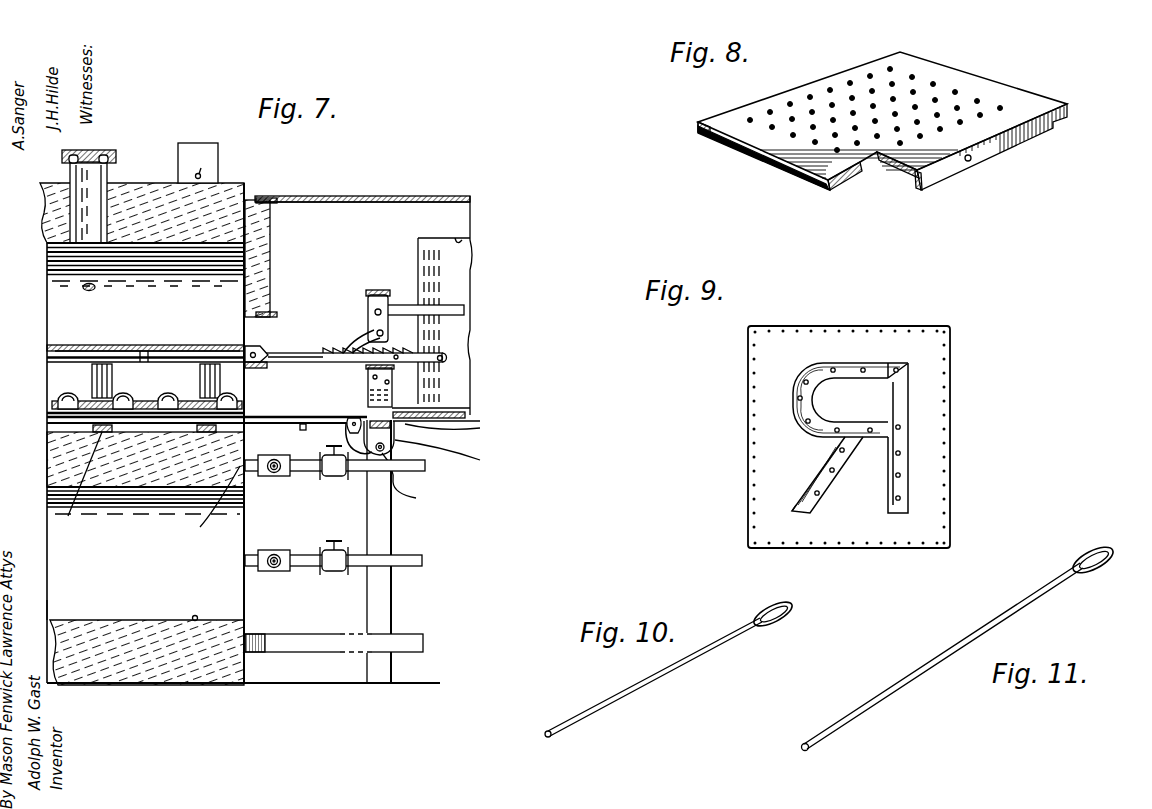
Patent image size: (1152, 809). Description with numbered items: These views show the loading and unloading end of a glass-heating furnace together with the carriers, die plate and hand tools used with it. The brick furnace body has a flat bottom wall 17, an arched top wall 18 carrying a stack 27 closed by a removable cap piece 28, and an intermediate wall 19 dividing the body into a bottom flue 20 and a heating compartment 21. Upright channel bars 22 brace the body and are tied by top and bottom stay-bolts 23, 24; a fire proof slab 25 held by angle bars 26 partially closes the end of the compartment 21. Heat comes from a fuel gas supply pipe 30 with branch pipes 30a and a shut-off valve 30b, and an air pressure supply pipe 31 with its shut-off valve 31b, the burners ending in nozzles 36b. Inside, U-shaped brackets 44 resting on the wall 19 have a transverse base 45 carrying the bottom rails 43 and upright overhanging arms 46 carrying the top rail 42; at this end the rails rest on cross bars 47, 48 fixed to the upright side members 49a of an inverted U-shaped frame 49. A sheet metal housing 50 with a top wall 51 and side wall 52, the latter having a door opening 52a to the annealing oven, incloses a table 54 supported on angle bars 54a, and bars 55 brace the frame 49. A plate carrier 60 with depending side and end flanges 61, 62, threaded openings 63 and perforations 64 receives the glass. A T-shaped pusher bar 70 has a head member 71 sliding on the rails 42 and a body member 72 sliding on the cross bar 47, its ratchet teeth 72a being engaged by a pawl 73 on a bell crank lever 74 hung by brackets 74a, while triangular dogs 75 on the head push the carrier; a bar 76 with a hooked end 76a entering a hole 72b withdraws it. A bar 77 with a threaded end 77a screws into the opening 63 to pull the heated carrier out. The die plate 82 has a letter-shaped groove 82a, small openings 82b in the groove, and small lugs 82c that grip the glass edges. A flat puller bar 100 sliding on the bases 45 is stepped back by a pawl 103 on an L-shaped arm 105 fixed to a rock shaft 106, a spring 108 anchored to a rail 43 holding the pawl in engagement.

In FIG. 7, the bottom wall 17 is at (125, 628).
In FIG. 7, the top wall 18 is at (42, 209).
In FIG. 7, the intermediate wall 19 is at (245, 466).
In FIG. 7, the bottom flue 20 is at (94, 598).
In FIG. 7, the heating compartment 21 is at (47, 289).
In FIG. 7, the upright channel bars 22 is at (197, 143).
In FIG. 7, the top stay-bolt 23 is at (192, 166).
In FIG. 7, the bottom stay-bolt 24 is at (196, 616).
In FIG. 7, the fire proof slab 25 is at (270, 245).
In FIG. 7, the angle bars 26 is at (275, 206).
In FIG. 7, the stack 27 is at (108, 157).
In FIG. 7, the cap piece 28 is at (90, 152).
In FIG. 7, the fuel gas supply pipe 30 is at (418, 472).
In FIG. 7, the fuel gas branch pipe 30a is at (211, 507).
In FIG. 7, the shut-off valve 30b is at (328, 477).
In FIG. 7, the air pressure supply pipe 31 is at (254, 567).
In FIG. 7, the shut-off valve 31b is at (330, 572).
In FIG. 7, the nozzle 36b is at (94, 289).
In FIG. 7, the top rail 42 is at (148, 355).
In FIG. 7, the bottom rail 43 is at (392, 415).
In FIG. 7, the U-shaped bracket 44 is at (92, 380).
In FIG. 7, the transverse base 45 is at (77, 483).
In FIG. 7, the upright overhanging arms 46 is at (200, 380).
In FIG. 7, the cross bar 47 is at (396, 374).
In FIG. 7, the cross bar 48 is at (396, 437).
In FIG. 7, the inverted U-shaped frame 49 is at (401, 621).
In FIG. 7, the upright side members 49a is at (391, 520).
In FIG. 7, the sheet metal housing 50 is at (442, 190).
In FIG. 7, the top wall 51 is at (392, 197).
In FIG. 7, the side wall 52 is at (471, 216).
In FIG. 7, the door opening 52a is at (458, 241).
In FIG. 7, the table 54 is at (466, 415).
In FIG. 7, the angle bars 54a is at (471, 430).
In FIG. 7, the brace bars 55 is at (319, 640).
In FIG. 7, the plate carrier 60 is at (190, 345).
In FIG. 8, the plate carrier 60 is at (826, 69).
In FIG. 8, the side flange 61 is at (856, 178).
In FIG. 7, the end flange 62 is at (140, 353).
In FIG. 8, the end flange 62 is at (915, 182).
In FIG. 8, the threaded opening 63 is at (970, 161).
In FIG. 7, the perforations 64 is at (95, 346).
In FIG. 8, the perforations 64 is at (912, 77).
In FIG. 7, the pusher bar 70 is at (315, 376).
In FIG. 7, the head member 71 is at (256, 368).
In FIG. 7, the body member 72 is at (297, 353).
In FIG. 7, the ratchet teeth 72a is at (396, 356).
In FIG. 7, the hole 72b is at (445, 358).
In FIG. 7, the pawl 73 is at (355, 338).
In FIG. 7, the bell crank lever 74 is at (442, 305).
In FIG. 7, the bracket 74a is at (372, 293).
In FIG. 7, the triangular dogs 75 is at (254, 348).
In FIG. 11, the bar 76 is at (878, 695).
In FIG. 11, the hooked end 76a is at (806, 742).
In FIG. 10, the bar 77 is at (618, 696).
In FIG. 10, the threaded end 77a is at (552, 728).
In FIG. 9, the die plate 82 is at (803, 320).
In FIG. 9, the groove 82a is at (805, 380).
In FIG. 9, the small openings 82b is at (820, 422).
In FIG. 9, the small lugs 82c is at (789, 535).
In FIG. 7, the puller bar 100 is at (47, 421).
In FIG. 7, the pawl 103 is at (347, 424).
In FIG. 7, the L-shaped arm 105 is at (362, 445).
In FIG. 7, the rock shaft 106 is at (416, 498).
In FIG. 7, the spring 108 is at (300, 429).